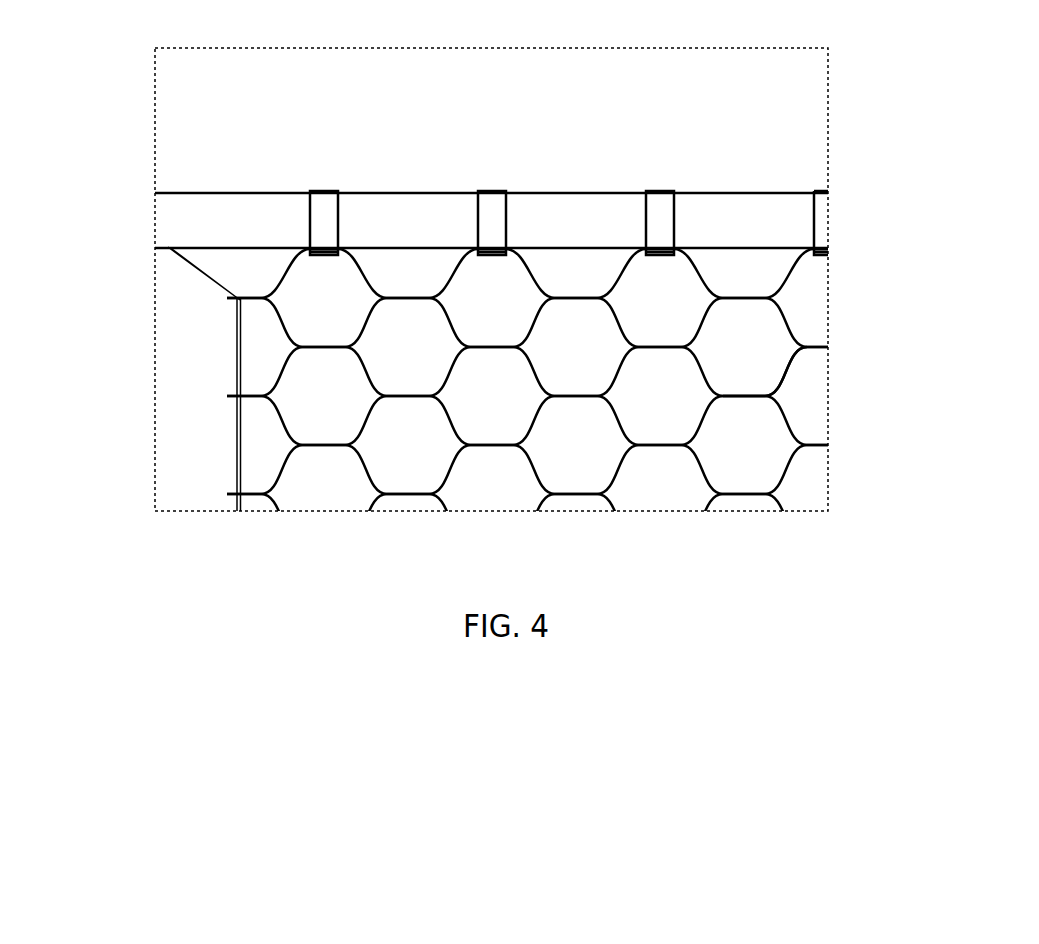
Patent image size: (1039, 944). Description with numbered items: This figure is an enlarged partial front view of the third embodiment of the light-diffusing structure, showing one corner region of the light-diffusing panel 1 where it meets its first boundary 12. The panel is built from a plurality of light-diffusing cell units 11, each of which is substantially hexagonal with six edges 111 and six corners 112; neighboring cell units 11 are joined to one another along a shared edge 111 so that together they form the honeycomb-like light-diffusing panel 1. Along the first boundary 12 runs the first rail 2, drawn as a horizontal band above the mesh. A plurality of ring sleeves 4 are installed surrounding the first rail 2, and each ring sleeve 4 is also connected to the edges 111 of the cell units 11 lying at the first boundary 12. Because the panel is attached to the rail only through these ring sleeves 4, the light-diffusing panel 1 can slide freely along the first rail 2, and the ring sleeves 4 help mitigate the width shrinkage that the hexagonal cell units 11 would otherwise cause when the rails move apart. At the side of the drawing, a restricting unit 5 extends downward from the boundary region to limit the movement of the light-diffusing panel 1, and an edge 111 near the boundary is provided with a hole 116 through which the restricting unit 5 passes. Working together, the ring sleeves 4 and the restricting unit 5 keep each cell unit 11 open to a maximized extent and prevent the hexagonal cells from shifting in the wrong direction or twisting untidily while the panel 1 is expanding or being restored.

The light-diffusing panel 1 is at (563, 339).
The light-diffusing cell unit 11 is at (587, 396).
The edge 111 is at (746, 392).
The corner 112 is at (768, 397).
The first boundary 12 is at (312, 246).
The hole 116 is at (236, 301).
The restricting unit 5 is at (238, 420).
The first rail 2 is at (782, 225).
The ring sleeve 4 is at (660, 218).